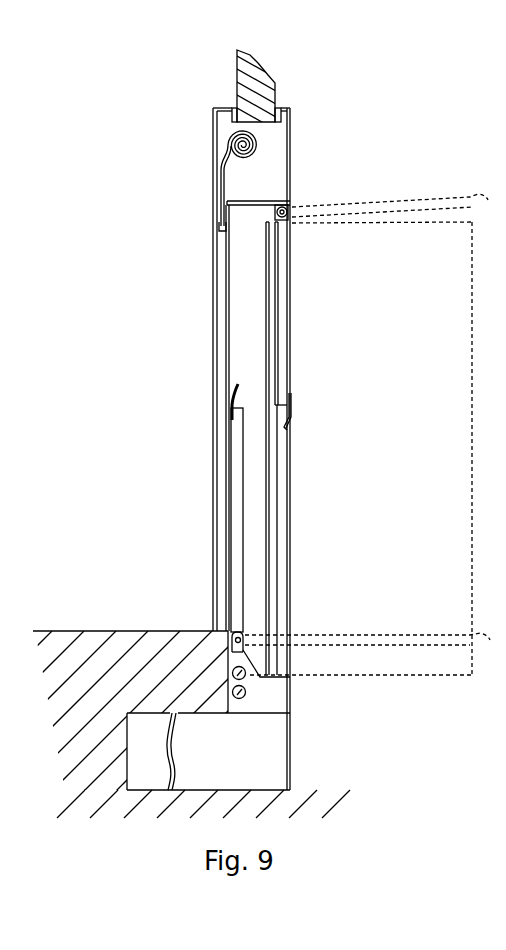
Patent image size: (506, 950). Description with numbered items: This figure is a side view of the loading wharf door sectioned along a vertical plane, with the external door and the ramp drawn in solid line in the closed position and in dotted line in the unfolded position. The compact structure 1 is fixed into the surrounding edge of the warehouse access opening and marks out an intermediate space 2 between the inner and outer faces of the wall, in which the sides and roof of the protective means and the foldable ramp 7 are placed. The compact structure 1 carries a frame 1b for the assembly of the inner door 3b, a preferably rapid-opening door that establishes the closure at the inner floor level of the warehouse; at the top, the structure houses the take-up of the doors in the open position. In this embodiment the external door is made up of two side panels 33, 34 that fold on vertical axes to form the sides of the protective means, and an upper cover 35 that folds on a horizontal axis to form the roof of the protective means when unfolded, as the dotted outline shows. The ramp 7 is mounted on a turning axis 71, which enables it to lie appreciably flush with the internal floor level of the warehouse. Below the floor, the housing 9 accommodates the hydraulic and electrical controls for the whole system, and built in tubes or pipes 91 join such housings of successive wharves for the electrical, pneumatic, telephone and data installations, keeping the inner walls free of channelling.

The compact structure 1 is at (208, 141).
The inner door 3b is at (214, 173).
The frame 1b is at (220, 370).
The intermediate space 2 is at (240, 305).
The side panel 33 is at (270, 457).
The side panel 34 is at (270, 457).
The upper cover 35 is at (285, 282).
The foldable ramp 7 is at (240, 502).
The turning axis 71 is at (235, 634).
The built in tubes or pipes 91 is at (234, 689).
The housing 9 is at (258, 693).